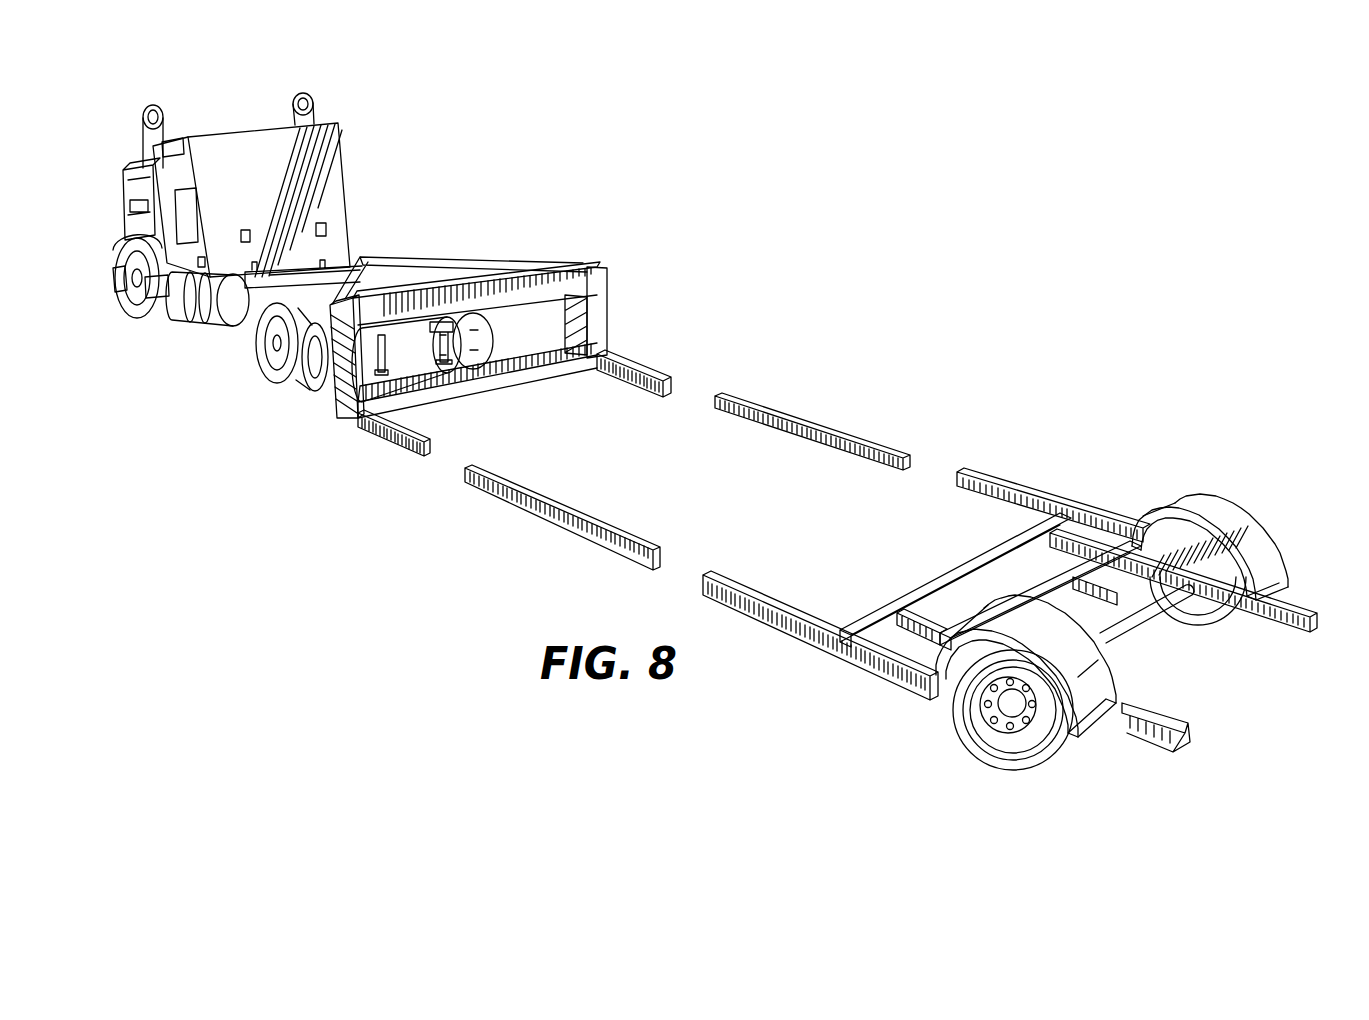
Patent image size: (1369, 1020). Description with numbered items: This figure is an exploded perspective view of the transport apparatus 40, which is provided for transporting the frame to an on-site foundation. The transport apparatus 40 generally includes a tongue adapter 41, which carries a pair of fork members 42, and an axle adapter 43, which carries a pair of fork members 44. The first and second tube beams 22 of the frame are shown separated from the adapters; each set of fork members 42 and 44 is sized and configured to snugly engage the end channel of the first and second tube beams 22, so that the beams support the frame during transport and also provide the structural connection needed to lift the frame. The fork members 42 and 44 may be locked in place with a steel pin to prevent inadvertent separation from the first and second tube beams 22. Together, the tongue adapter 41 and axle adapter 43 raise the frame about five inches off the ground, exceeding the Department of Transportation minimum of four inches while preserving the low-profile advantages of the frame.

The first and second tube beams 22 is at (567, 503).
The transport apparatus 40 is at (957, 360).
The tongue adapter 41 is at (512, 258).
The fork members 42 is at (650, 373).
The axle adapter 43 is at (1104, 508).
The fork members 44 is at (757, 593).